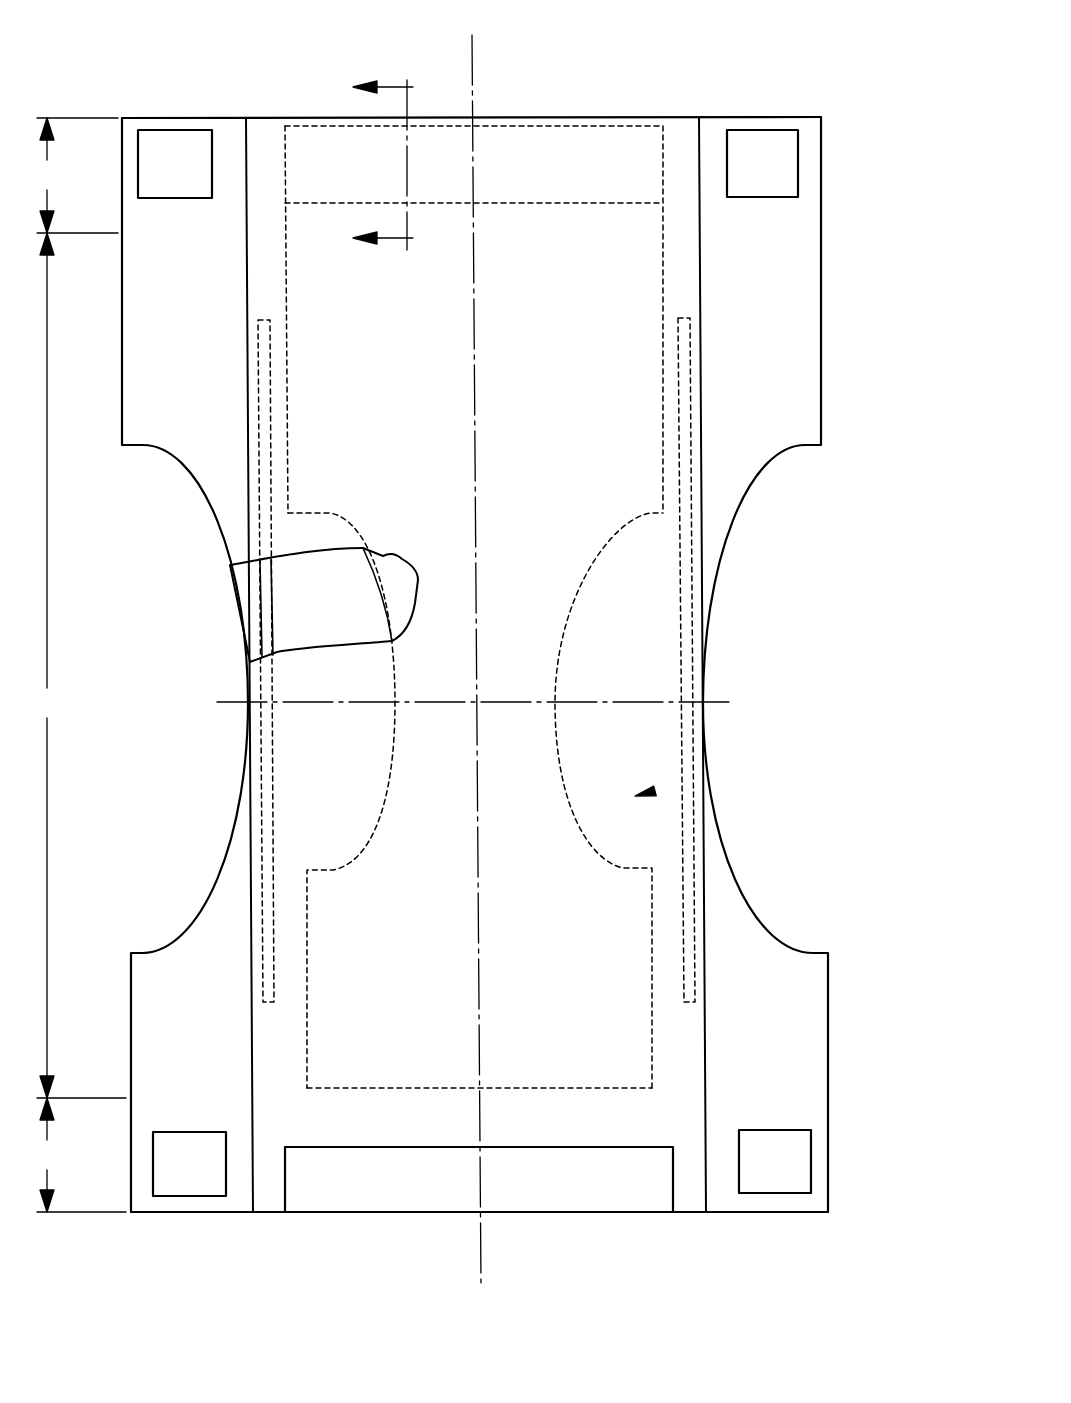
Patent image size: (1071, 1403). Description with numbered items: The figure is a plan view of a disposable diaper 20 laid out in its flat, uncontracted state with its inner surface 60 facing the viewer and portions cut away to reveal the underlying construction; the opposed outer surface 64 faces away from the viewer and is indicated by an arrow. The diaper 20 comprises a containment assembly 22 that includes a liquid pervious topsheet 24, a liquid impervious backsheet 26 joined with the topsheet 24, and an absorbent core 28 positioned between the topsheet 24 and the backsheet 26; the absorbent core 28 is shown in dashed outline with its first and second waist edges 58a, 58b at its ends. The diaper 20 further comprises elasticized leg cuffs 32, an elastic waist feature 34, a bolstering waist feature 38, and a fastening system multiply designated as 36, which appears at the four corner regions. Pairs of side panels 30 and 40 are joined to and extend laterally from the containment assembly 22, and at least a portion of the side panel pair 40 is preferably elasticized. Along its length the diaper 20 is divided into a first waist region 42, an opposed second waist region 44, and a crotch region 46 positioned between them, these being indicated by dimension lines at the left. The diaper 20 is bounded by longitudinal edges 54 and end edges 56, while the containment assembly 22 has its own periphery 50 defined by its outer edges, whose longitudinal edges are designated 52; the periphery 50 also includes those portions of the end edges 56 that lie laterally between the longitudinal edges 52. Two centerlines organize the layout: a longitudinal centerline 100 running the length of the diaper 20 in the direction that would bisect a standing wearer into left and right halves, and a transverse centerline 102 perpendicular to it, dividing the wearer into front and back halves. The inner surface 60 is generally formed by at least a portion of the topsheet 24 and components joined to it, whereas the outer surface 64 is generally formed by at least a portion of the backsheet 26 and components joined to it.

The diaper 20 is at (785, 100).
The containment assembly 22 is at (385, 385).
The topsheet 24 is at (603, 383).
The backsheet 26 is at (322, 588).
The absorbent core 28 is at (392, 590).
The side panels 30 is at (793, 259).
The elasticized leg cuffs 32 is at (267, 622).
The elastic waist feature 34 is at (622, 1183).
The fastening system 36 is at (185, 145).
The bolstering waist feature 38 is at (632, 165).
The side panels 40 is at (800, 1098).
The first waist region 42 is at (48, 175).
The second waist region 44 is at (54, 1155).
The crotch region 46 is at (53, 665).
The periphery 50 is at (706, 912).
The longitudinal edges 52 is at (706, 1000).
The longitudinal edges 54 is at (775, 465).
The end edges 56 is at (497, 117).
The first waist edge 58a is at (545, 202).
The second waist edge 58b is at (545, 1089).
The inner surface 60 is at (597, 275).
The outer surface 64 is at (655, 790).
The longitudinal centerline 100 is at (472, 45).
The transverse centerline 102 is at (725, 697).